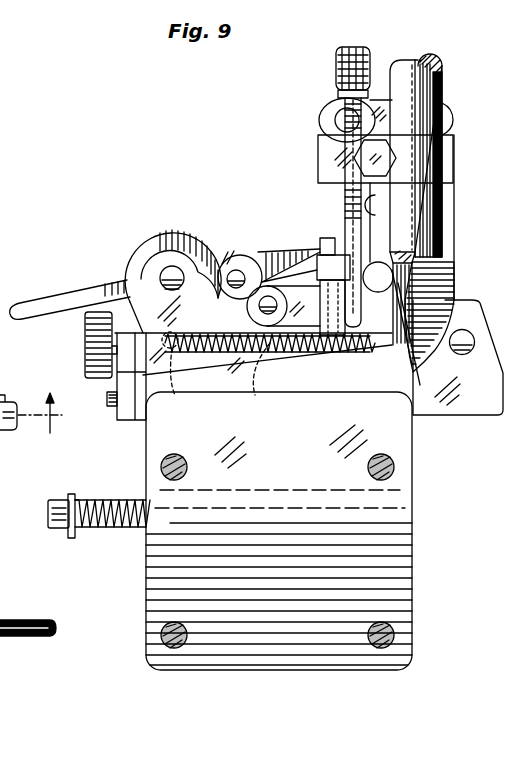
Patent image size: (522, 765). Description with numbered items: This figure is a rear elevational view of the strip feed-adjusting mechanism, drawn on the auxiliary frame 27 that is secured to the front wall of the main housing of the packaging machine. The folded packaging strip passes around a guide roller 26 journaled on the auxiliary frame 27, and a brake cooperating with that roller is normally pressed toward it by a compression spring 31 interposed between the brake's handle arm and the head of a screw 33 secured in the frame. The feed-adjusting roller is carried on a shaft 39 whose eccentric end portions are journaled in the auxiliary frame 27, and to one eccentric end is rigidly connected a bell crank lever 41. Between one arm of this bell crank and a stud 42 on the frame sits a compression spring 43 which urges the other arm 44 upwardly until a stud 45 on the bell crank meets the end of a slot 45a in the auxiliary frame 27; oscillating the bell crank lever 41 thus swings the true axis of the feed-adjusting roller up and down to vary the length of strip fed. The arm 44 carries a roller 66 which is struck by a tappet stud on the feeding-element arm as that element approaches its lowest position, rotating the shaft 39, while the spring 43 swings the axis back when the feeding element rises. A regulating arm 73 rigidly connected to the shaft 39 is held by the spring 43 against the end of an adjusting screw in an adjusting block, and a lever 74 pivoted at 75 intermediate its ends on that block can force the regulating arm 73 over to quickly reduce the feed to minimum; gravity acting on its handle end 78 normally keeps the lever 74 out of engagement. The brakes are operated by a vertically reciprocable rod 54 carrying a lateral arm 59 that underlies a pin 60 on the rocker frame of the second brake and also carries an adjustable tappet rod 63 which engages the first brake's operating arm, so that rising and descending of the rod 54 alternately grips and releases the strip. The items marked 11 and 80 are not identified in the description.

The lever 11 is at (31, 403).
The guide roller 26 is at (150, 237).
The auxiliary frame 27 is at (146, 438).
The compression spring 31 is at (113, 499).
The screw 33 is at (55, 500).
The shaft 39 is at (400, 268).
The bell crank lever 41 is at (318, 335).
The stud 42 is at (174, 374).
The compression spring 43 is at (255, 380).
The arm of the bell crank 44 is at (293, 300).
The stud 45 is at (410, 362).
The slot 45a is at (423, 327).
The vertically reciprocable rod 54 is at (445, 218).
The lateral arm 59 is at (318, 162).
The pin 60 is at (337, 127).
The adjustable tappet rod 63 is at (343, 206).
The roller 66 is at (248, 313).
The regulating arm 73 is at (271, 265).
The lever 74 is at (263, 258).
The pivot 75 is at (234, 270).
The handle end 78 is at (102, 290).
The knob 80 is at (101, 345).